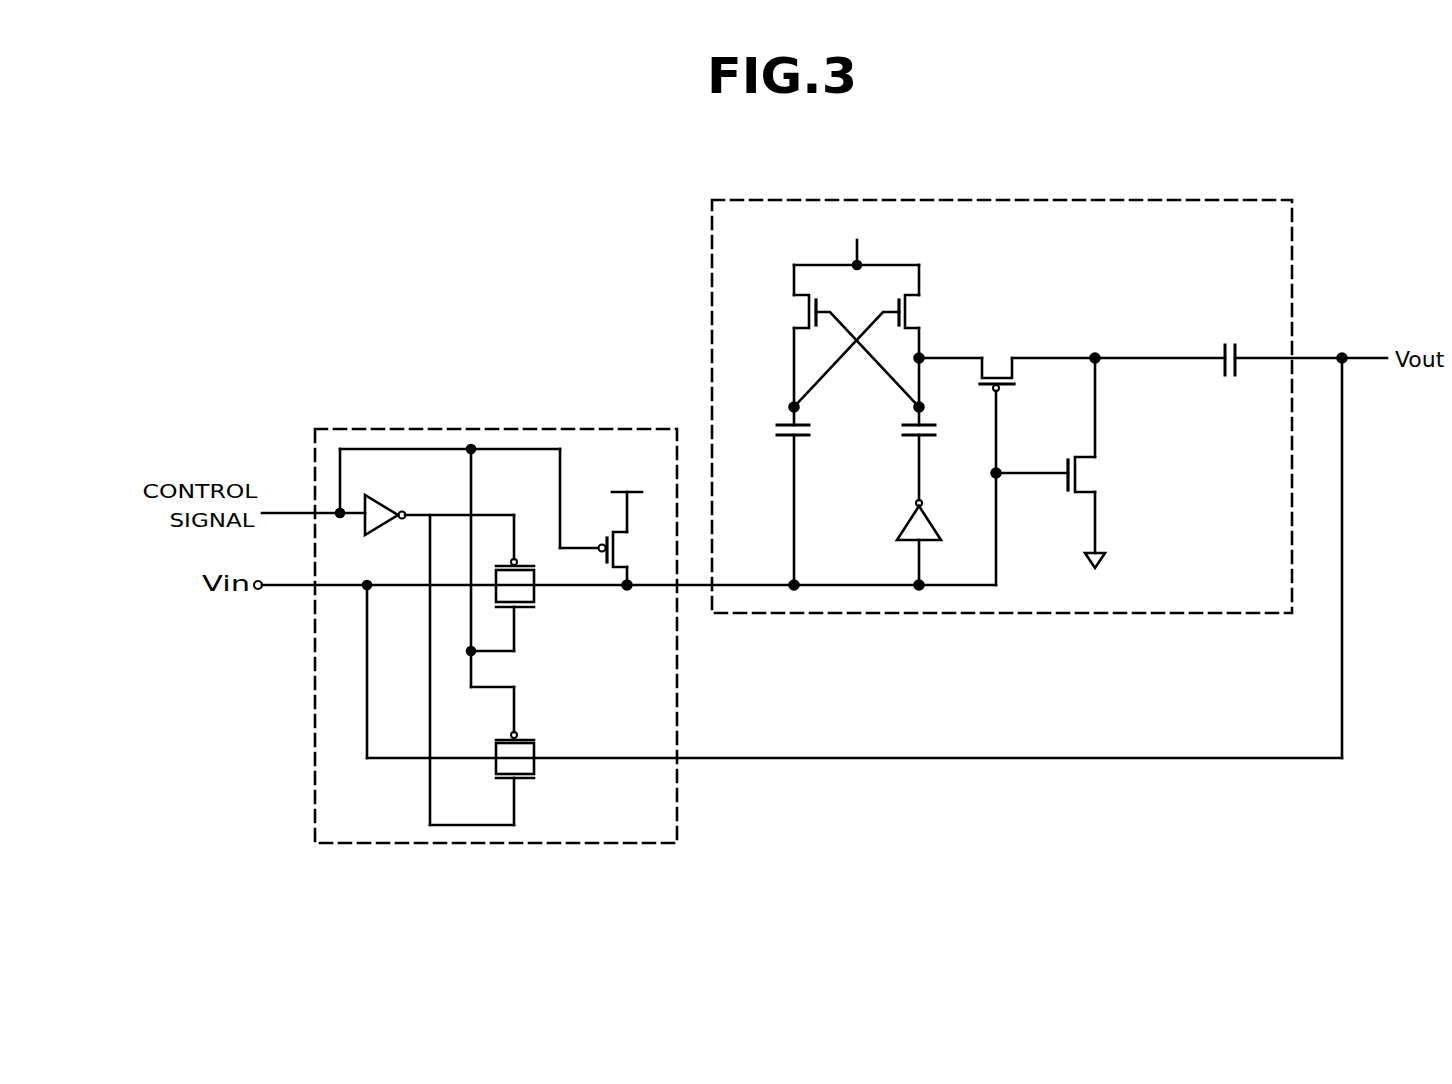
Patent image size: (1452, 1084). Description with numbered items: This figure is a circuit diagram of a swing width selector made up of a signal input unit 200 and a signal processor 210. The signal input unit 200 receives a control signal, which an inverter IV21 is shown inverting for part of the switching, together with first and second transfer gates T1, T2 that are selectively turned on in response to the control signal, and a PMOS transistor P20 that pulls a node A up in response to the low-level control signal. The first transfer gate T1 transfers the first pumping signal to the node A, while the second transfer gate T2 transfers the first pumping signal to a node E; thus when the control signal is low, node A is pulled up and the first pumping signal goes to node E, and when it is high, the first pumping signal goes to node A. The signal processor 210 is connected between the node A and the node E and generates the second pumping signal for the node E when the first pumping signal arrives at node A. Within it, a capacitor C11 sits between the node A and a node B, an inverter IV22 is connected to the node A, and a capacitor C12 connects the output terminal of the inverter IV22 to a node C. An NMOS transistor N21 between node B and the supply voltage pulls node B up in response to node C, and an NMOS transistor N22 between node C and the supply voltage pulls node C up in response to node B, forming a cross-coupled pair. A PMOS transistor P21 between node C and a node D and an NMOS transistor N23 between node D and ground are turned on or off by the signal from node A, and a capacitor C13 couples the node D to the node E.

The signal input unit 200 is at (538, 428).
The signal processor 210 is at (1147, 198).
The inverter IV21 is at (394, 502).
The inverter IV22 is at (945, 520).
The first transfer gate T1 is at (515, 583).
The second transfer gate T2 is at (515, 755).
The PMOS transistor P20 is at (636, 549).
The PMOS transistor P21 is at (997, 356).
The NMOS transistor N21 is at (778, 311).
The NMOS transistor N22 is at (932, 311).
The NMOS transistor N23 is at (1109, 474).
The capacitor C11 is at (768, 430).
The capacitor C12 is at (894, 430).
The capacitor C13 is at (1224, 343).
The node A is at (626, 600).
The node B is at (780, 402).
The node C is at (931, 400).
The node D is at (1095, 341).
The node E is at (1338, 340).